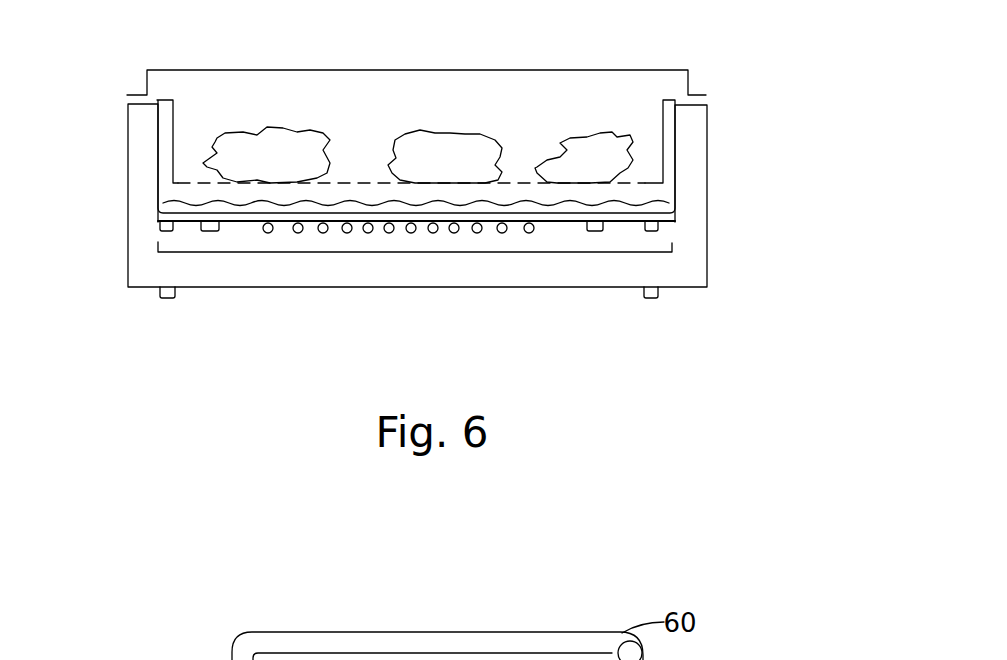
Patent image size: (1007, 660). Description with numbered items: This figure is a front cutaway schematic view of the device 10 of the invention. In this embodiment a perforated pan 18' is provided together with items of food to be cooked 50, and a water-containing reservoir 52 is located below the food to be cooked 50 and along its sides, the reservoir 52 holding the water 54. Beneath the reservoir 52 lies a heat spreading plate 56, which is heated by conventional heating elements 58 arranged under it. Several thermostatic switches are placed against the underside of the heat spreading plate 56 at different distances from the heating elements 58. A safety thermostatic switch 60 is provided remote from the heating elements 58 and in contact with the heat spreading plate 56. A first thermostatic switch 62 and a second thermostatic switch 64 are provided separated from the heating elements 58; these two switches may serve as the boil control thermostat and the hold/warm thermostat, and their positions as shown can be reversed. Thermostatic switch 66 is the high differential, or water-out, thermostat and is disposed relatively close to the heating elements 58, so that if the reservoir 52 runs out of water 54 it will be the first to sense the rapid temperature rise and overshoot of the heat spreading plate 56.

The device 10 is at (746, 77).
The perforated pan 18' is at (411, 103).
The items of food to be cooked 50 is at (296, 135).
The water-containing reservoir 52 is at (663, 191).
The water 54 is at (665, 209).
The heat spreading plate 56 is at (672, 223).
The heating elements 58 is at (529, 233).
The safety thermostatic switch 60 is at (163, 225).
The first thermostatic switch 62 is at (207, 233).
The second thermostatic switch 64 is at (654, 232).
The thermostatic switch 66 is at (599, 232).